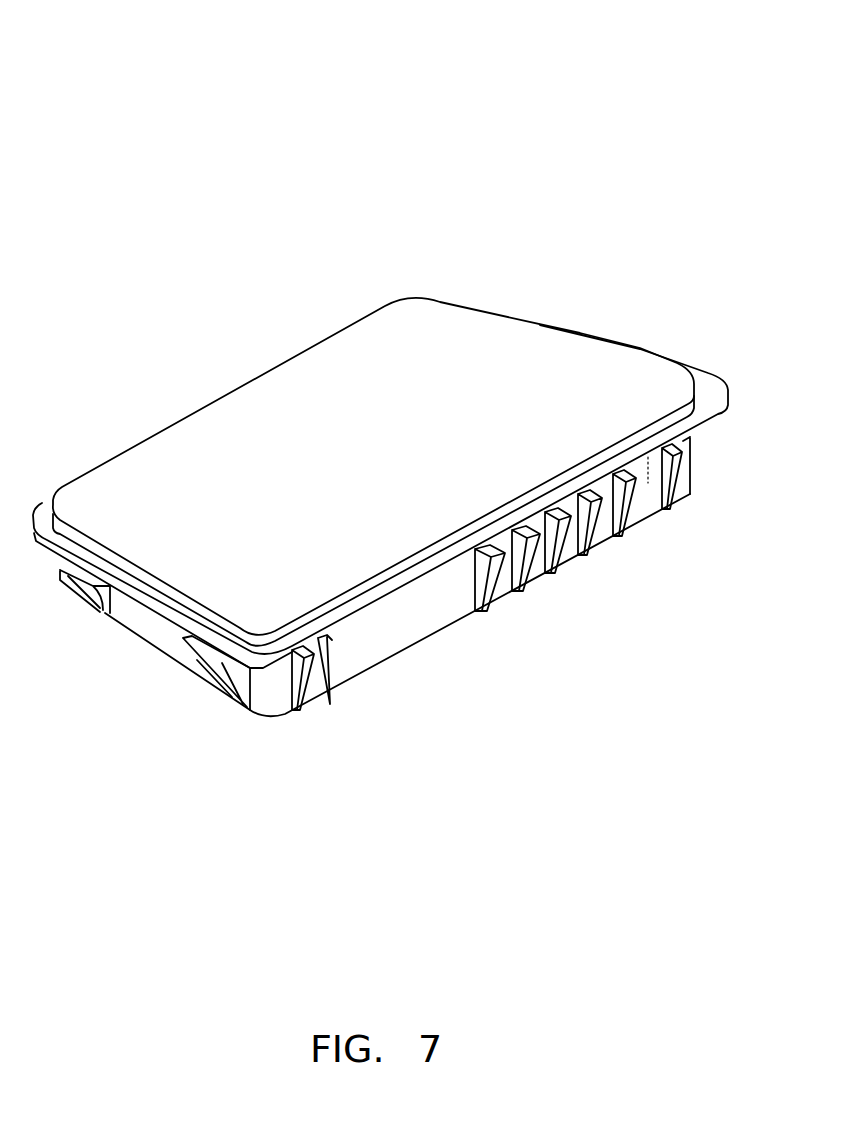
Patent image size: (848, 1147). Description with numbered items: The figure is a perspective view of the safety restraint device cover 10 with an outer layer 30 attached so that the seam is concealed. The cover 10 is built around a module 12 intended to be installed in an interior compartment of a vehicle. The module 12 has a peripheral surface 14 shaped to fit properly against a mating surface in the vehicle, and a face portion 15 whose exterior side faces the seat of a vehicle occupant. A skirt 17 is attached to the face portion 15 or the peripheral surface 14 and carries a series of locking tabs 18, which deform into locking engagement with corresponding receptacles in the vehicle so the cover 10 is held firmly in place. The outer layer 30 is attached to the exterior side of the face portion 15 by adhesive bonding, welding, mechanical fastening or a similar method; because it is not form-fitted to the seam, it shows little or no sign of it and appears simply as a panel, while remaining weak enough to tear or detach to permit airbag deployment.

The cover 10 is at (201, 150).
The module 12 is at (624, 296).
The peripheral surface 14 is at (438, 600).
The face portion 15 is at (150, 598).
The skirt 17 is at (605, 530).
The locking tabs 18 is at (683, 476).
The outer layer 30 is at (183, 467).